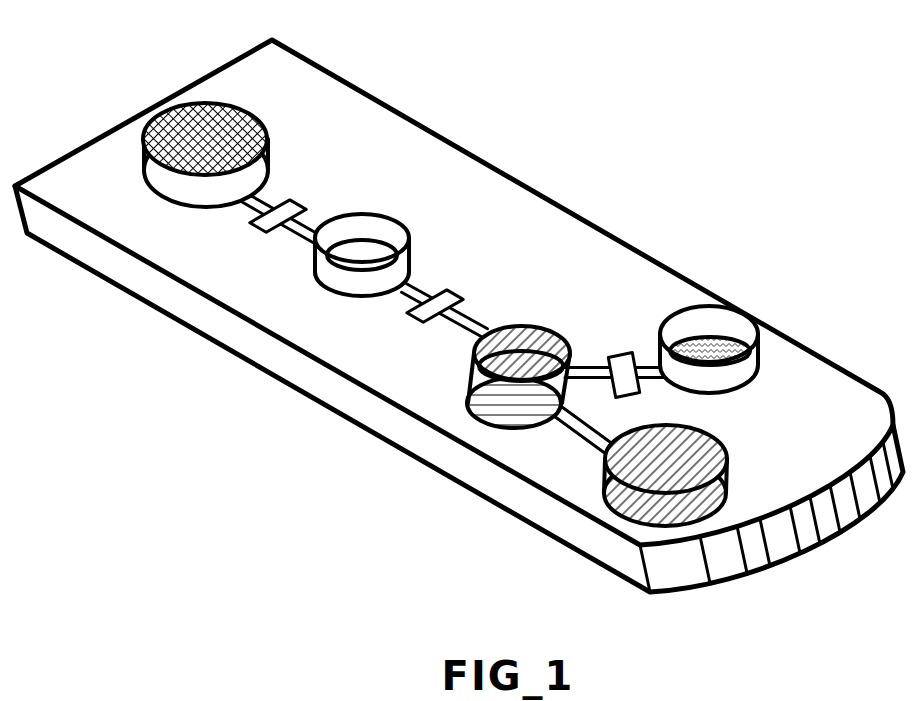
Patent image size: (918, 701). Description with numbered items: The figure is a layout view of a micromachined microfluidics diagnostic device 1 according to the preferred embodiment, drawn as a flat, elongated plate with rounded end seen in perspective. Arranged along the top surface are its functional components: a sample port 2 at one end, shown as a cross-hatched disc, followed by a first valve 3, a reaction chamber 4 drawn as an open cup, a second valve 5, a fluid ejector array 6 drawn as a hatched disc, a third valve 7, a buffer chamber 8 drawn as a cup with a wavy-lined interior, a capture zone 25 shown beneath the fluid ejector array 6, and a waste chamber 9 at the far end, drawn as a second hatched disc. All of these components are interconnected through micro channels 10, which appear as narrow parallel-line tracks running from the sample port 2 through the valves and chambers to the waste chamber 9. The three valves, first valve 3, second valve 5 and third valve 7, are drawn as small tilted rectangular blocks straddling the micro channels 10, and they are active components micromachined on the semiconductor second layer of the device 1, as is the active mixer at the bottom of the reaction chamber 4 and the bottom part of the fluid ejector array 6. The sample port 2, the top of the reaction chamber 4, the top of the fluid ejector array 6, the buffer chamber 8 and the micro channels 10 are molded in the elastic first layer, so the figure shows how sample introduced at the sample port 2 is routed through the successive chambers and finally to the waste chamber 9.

The micromachined microfluidics diagnostic device 1 is at (170, 246).
The sample port 2 is at (210, 150).
The first valve 3 is at (292, 198).
The reaction chamber 4 is at (370, 245).
The second valve 5 is at (460, 292).
The fluid ejector array 6 is at (478, 362).
The third valve 7 is at (620, 350).
The buffer chamber 8 is at (720, 353).
The waste chamber 9 is at (667, 483).
The micro channels 10 is at (407, 288).
The capture zone 25 is at (490, 410).